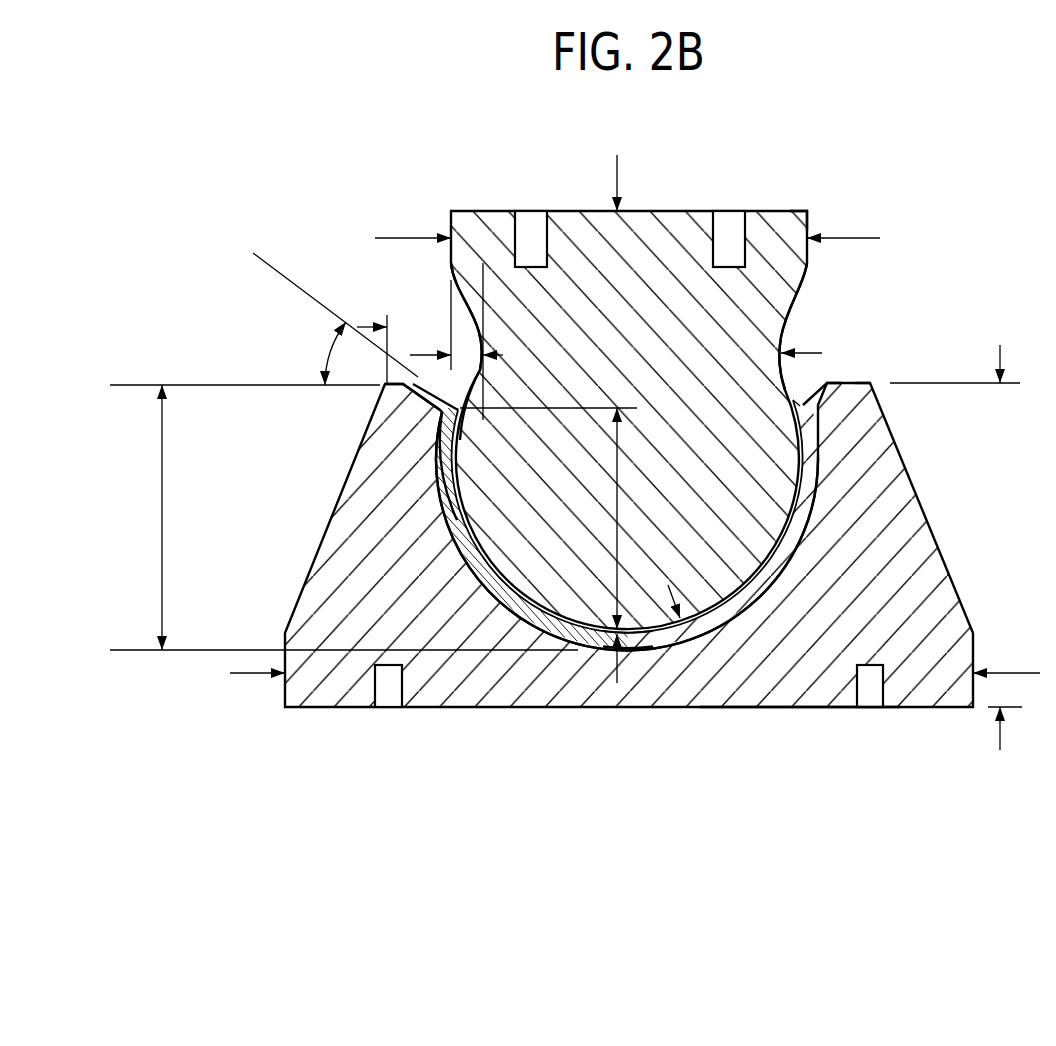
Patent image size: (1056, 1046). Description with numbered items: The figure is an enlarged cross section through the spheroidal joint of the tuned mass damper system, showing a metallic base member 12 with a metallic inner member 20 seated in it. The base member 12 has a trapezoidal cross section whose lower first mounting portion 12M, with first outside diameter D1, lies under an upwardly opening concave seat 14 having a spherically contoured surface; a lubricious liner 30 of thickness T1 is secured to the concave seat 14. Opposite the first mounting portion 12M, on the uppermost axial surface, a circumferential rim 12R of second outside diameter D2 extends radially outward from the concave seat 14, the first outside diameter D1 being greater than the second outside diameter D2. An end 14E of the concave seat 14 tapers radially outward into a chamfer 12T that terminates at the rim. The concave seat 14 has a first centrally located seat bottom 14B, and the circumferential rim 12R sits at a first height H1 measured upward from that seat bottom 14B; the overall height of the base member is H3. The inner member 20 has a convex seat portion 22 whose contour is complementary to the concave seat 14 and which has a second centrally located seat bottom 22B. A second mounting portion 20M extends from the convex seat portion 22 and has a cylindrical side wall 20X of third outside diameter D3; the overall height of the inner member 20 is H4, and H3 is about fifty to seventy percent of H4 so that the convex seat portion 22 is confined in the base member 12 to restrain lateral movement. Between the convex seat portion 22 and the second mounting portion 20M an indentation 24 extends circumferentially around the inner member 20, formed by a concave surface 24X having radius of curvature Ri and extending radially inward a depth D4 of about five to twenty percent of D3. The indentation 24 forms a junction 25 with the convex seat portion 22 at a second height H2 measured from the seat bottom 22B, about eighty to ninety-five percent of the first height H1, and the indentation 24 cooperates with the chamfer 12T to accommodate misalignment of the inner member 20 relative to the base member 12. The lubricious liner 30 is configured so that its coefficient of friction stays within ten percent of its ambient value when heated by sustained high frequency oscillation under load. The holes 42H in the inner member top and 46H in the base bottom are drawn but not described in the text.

The metallic base member 12 is at (895, 488).
The concave seat 14 is at (780, 513).
The metallic inner member 20 is at (530, 570).
The convex seat portion 22 is at (455, 565).
The indentation 24 is at (812, 333).
The junction 25 is at (467, 413).
The lubricious liner 30 is at (448, 476).
The chamfer 12T is at (435, 410).
The circumferential rim 12R is at (868, 383).
The first mounting portion 12M is at (803, 680).
The end of the concave seat 14E is at (830, 413).
The first centrally located seat bottom 14B is at (642, 640).
The second centrally located seat bottom 22B is at (651, 654).
The second mounting portion 20M is at (657, 243).
The cylindrical side wall 20X is at (810, 226).
The concave surface 24X is at (482, 330).
The holes in ball member top 42H is at (530, 250).
The holes in base bottom 46H is at (388, 690).
The first outside diameter D1 is at (1015, 673).
The second outside diameter D2 is at (360, 327).
The third outside diameter D3 is at (403, 238).
The depth of the indentation D4 is at (500, 355).
The first height H1 is at (162, 478).
The second height H2 is at (617, 488).
The overall height of the base member H3 is at (1000, 737).
The overall height of the inner member H4 is at (617, 175).
The thickness of the liner T1 is at (693, 651).
The radius of curvature Ri is at (816, 353).